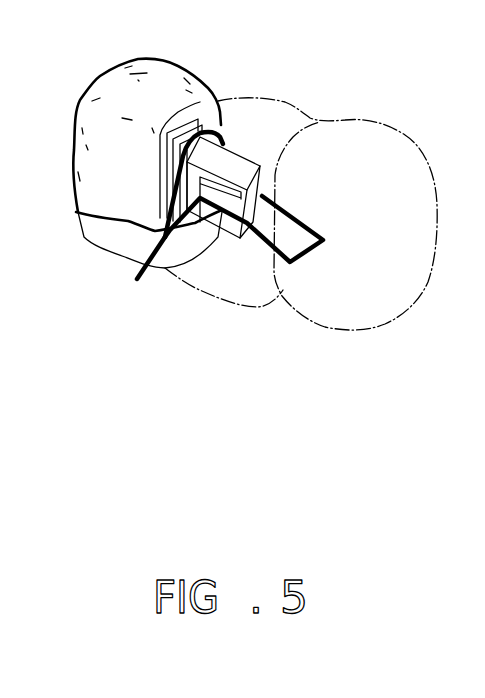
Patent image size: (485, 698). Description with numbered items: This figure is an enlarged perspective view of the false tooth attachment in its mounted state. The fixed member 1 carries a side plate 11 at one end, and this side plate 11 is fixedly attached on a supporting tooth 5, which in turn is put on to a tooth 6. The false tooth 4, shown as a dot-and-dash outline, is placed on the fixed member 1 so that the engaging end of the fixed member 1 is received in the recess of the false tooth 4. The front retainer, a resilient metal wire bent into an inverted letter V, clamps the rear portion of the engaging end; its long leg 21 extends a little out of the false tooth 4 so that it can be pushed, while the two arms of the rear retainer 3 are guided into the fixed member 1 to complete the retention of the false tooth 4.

The fixed member 1 is at (237, 163).
The rear retainer 3 is at (291, 265).
The false tooth 4 is at (300, 113).
The supporting tooth 5 is at (121, 79).
The tooth 6 is at (88, 236).
The side plate 11 is at (193, 130).
The long leg 21 is at (137, 283).